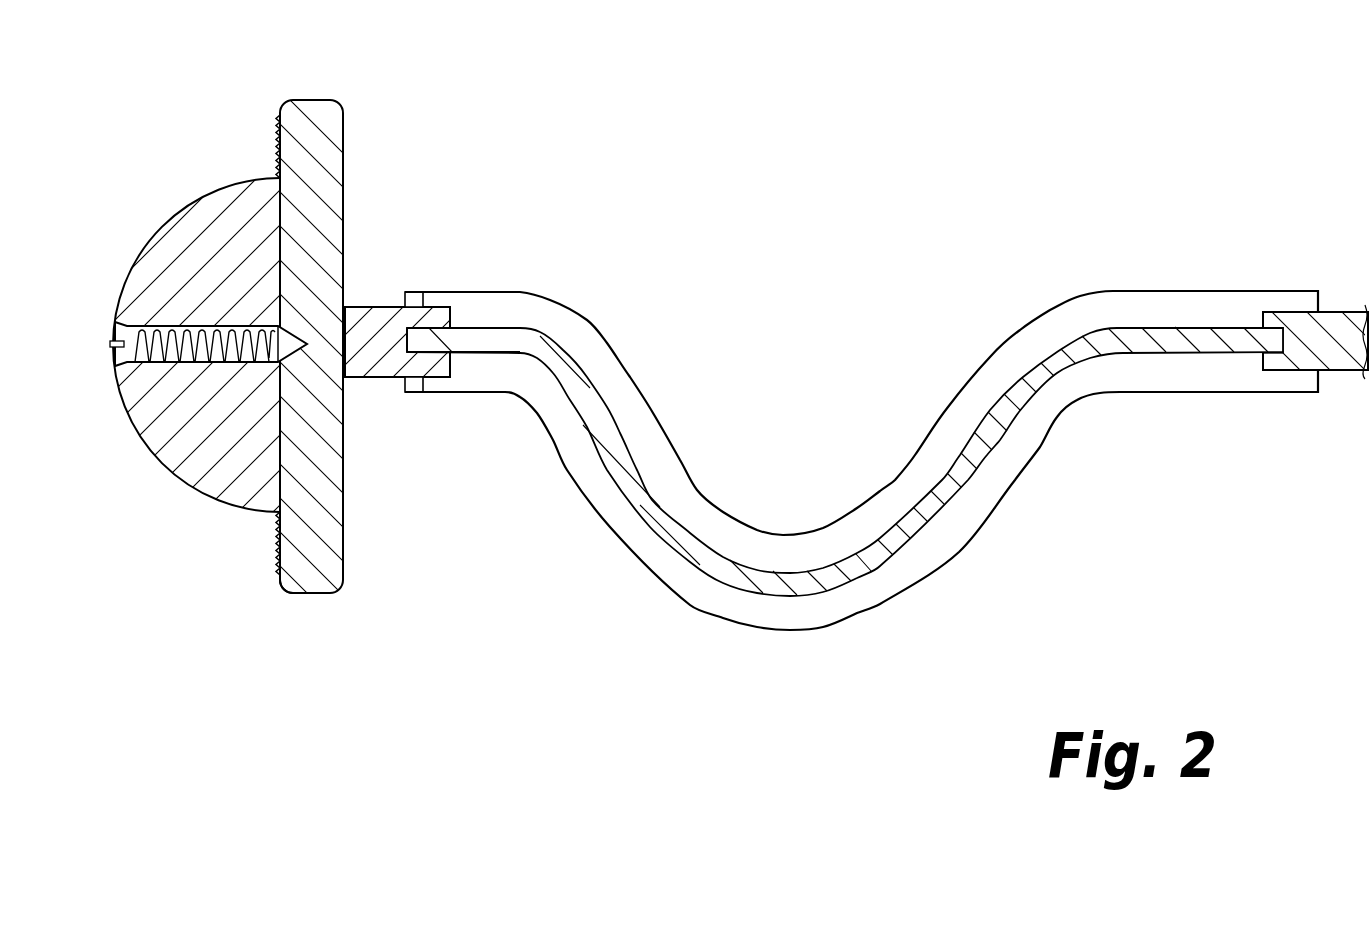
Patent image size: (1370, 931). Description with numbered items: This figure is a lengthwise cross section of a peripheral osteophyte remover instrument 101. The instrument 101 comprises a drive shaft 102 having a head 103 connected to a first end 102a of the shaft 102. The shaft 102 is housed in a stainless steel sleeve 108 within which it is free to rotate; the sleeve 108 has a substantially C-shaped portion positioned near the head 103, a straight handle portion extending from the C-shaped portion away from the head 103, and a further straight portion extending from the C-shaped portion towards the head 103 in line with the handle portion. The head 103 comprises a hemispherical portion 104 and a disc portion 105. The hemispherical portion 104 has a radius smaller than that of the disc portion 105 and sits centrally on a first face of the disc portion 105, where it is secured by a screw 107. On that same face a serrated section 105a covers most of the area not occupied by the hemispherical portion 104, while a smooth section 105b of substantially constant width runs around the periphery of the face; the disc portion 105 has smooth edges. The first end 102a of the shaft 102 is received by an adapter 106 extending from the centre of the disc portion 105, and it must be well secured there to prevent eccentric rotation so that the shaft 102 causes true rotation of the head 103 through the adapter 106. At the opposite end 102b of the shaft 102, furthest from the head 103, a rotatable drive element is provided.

The instrument 101 is at (855, 452).
The shaft 102 is at (694, 550).
The first end of the shaft 102a is at (487, 338).
The end of the shaft furthest from the head 102b is at (1246, 335).
The head 103 is at (392, 379).
The hemispherical portion 104 is at (175, 447).
The disc portion 105 is at (320, 545).
The serrated section 105a is at (280, 543).
The smooth section 105b is at (280, 580).
The adapter 106 is at (425, 322).
The screw 107 is at (252, 318).
The sleeve 108 is at (855, 626).